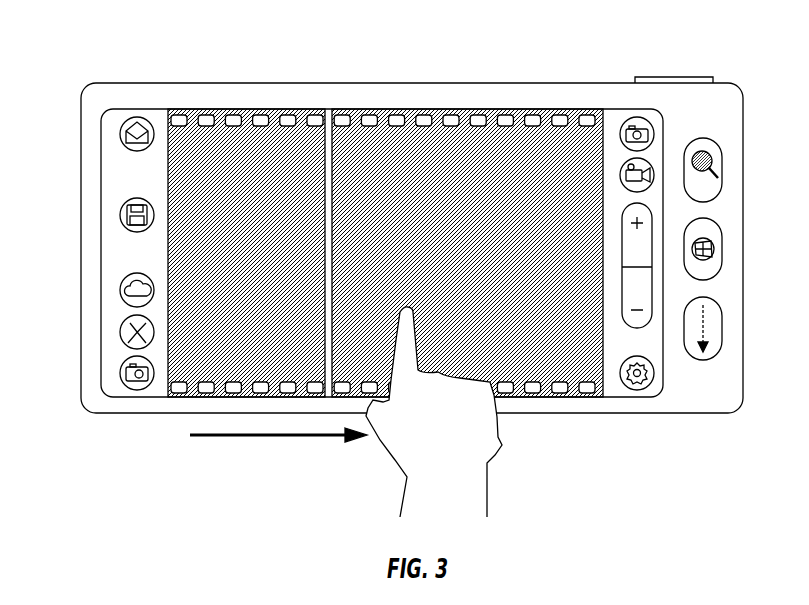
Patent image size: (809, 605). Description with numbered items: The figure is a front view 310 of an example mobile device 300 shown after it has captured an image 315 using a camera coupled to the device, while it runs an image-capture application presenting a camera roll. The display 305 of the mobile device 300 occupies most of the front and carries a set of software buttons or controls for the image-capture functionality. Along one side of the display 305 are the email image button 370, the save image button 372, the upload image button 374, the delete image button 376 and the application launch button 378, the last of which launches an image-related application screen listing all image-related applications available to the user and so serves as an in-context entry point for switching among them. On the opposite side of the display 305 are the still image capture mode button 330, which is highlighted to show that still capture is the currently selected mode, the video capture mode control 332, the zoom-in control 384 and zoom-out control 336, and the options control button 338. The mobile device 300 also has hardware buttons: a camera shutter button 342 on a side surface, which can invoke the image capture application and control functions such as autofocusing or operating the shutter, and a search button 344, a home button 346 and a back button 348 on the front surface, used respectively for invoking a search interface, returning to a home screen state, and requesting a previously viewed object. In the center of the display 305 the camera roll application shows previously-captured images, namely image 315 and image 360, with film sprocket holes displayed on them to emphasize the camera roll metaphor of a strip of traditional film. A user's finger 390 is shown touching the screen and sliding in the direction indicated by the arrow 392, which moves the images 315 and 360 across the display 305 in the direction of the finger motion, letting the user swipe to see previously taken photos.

The mobile device 300 is at (140, 83).
The front view 310 is at (115, 33).
The display 305 is at (162, 133).
The image 315 is at (273, 133).
The image 360 is at (425, 110).
The camera shutter button 342 is at (673, 76).
The email image button 370 is at (120, 134).
The save image button 372 is at (120, 215).
The upload image button 374 is at (120, 290).
The delete image button 376 is at (120, 332).
The application launch button 378 is at (120, 373).
The still image capture mode button 330 is at (653, 132).
The video capture mode control 332 is at (653, 162).
The zoom-in control 384 is at (653, 222).
The zoom-out control 336 is at (653, 300).
The options control button 338 is at (655, 374).
The search button 344 is at (723, 170).
The home button 346 is at (723, 250).
The back button 348 is at (723, 330).
The finger 390 is at (408, 337).
The arrow 392 is at (292, 438).